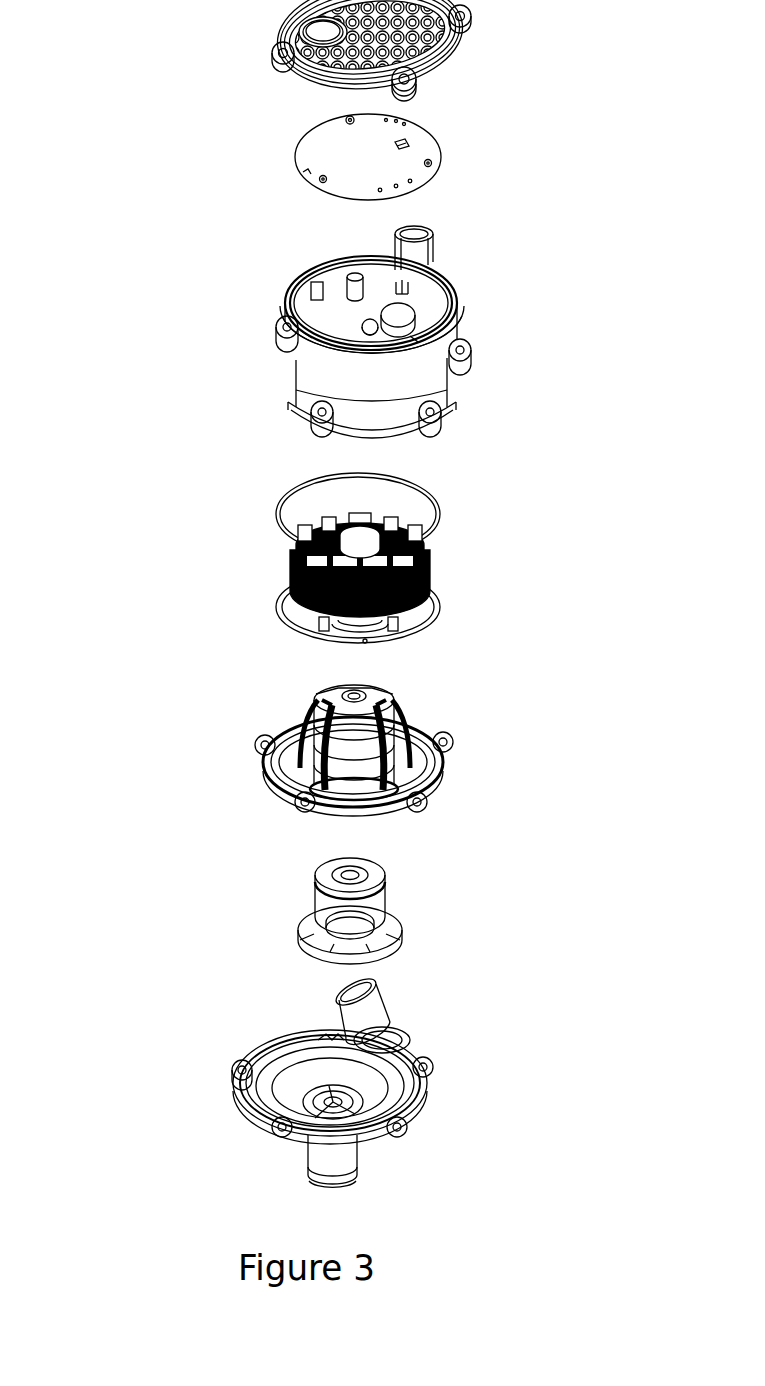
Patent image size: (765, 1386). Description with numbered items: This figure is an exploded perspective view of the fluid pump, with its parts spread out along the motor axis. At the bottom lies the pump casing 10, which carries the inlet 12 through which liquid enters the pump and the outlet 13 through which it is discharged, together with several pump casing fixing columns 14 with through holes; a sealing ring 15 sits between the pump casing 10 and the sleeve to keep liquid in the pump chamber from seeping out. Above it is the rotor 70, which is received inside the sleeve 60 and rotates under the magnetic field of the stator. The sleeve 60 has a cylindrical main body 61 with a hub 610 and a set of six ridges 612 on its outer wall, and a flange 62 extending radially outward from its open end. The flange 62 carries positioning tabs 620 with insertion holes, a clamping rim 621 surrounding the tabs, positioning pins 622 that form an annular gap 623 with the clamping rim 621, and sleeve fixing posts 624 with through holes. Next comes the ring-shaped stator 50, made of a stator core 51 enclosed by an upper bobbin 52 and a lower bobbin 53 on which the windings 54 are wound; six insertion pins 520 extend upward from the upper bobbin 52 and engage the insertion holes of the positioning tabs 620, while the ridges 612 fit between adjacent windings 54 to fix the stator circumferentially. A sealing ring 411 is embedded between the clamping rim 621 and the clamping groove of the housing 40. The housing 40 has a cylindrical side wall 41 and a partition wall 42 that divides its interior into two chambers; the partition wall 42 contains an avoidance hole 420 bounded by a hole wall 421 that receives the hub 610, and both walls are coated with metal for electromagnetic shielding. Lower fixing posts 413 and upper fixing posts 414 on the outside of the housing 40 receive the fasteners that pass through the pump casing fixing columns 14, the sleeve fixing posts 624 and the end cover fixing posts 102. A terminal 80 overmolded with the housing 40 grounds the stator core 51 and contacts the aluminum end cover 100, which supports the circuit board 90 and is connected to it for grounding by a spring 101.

The pump casing 10 is at (381, 1093).
The inlet 12 is at (332, 1182).
The outlet 13 is at (337, 991).
The pump casing fixing column 14 is at (407, 1126).
The sealing ring 15 is at (363, 641).
The housing 40 is at (307, 333).
The side wall 41 is at (361, 333).
The partition wall 42 is at (462, 322).
The sealing ring 411 is at (330, 637).
The lower fixing post 413 is at (277, 330).
The upper fixing post 414 is at (440, 428).
The avoidance hole 420 is at (362, 322).
The hole wall 421 is at (371, 320).
The stator 50 is at (297, 574).
The stator core 51 is at (430, 577).
The upper bobbin 52 is at (430, 617).
The lower bobbin 53 is at (400, 521).
The windings 54 is at (298, 516).
The insertion pins 520 is at (397, 627).
The sleeve 60 is at (296, 759).
The main body 61 is at (352, 723).
The hub 610 is at (377, 696).
The ridges 612 is at (297, 724).
The flange 62 is at (372, 789).
The positioning tabs 620 is at (295, 797).
The clamping rim 621 is at (280, 767).
The positioning pins 622 is at (292, 785).
The annular gap 623 is at (452, 741).
The sleeve fixing posts 624 is at (427, 803).
The rotor 70 is at (373, 902).
The terminal 80 is at (403, 265).
The circuit board 90 is at (442, 153).
The spring 101 is at (399, 142).
The end cover 100 is at (455, 58).
The end cover fixing posts 102 is at (277, 53).